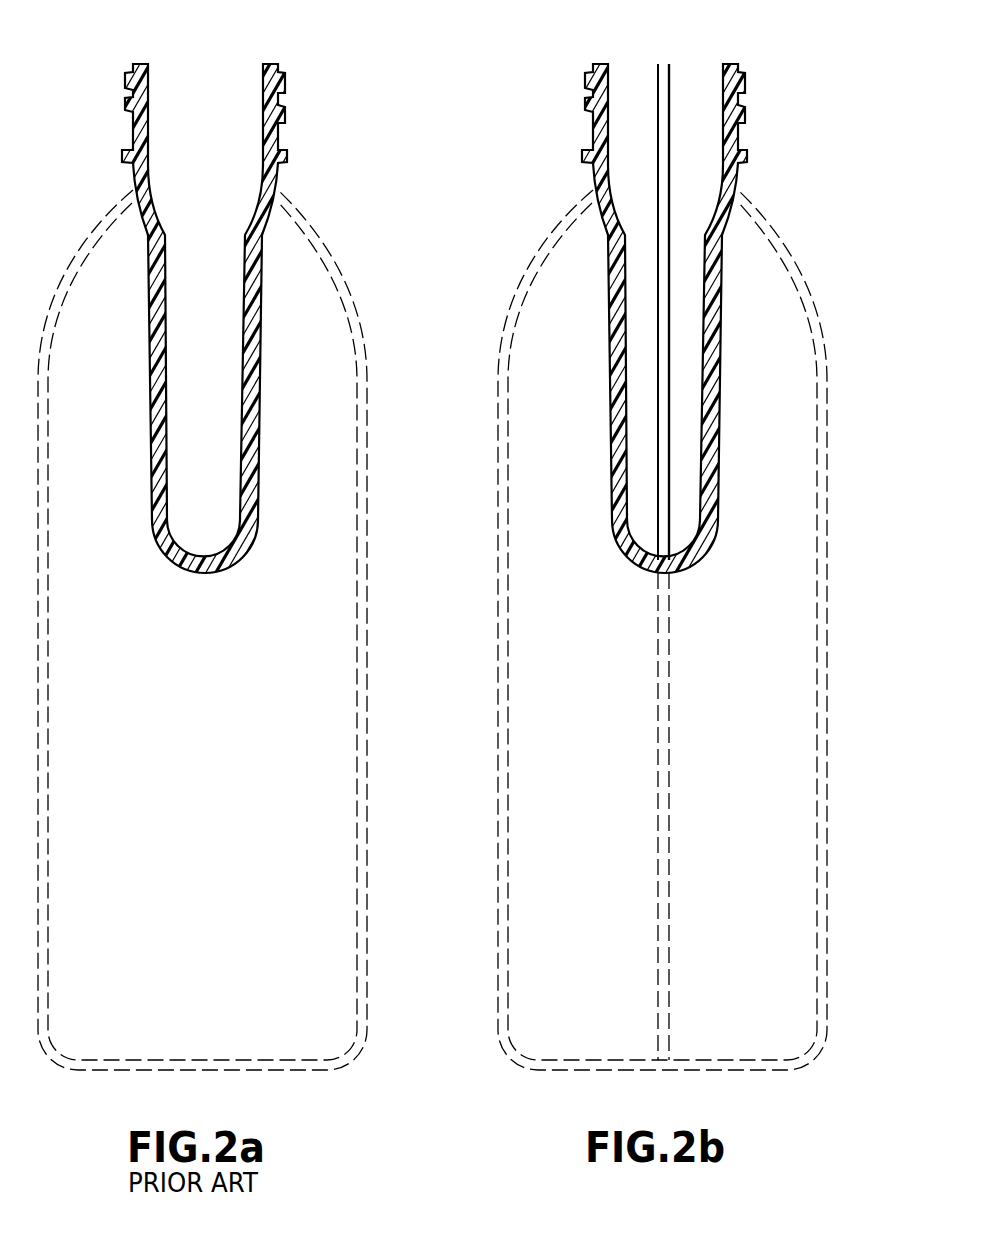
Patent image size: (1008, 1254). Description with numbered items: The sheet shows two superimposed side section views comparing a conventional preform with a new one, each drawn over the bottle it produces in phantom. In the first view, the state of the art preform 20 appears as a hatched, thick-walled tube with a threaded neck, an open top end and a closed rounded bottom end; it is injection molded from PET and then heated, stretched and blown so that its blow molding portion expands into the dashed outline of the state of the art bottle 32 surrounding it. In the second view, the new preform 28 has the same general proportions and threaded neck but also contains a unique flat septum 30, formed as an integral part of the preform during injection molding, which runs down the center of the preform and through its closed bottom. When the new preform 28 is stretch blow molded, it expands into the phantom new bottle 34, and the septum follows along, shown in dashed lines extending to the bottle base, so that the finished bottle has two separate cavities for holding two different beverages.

In FIG. 2a, the preform 20 is at (282, 91).
In FIG. 2a, the bottle 32 is at (352, 300).
In FIG. 2b, the new preform 28 is at (742, 98).
In FIG. 2b, the flat septum 30 is at (670, 188).
In FIG. 2b, the new bottle 34 is at (790, 256).